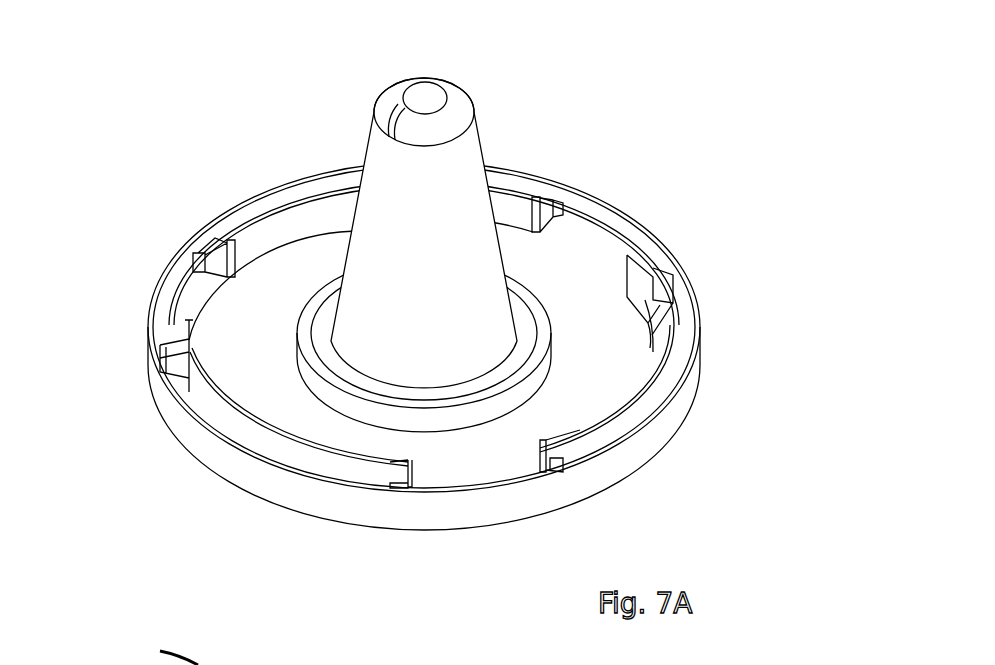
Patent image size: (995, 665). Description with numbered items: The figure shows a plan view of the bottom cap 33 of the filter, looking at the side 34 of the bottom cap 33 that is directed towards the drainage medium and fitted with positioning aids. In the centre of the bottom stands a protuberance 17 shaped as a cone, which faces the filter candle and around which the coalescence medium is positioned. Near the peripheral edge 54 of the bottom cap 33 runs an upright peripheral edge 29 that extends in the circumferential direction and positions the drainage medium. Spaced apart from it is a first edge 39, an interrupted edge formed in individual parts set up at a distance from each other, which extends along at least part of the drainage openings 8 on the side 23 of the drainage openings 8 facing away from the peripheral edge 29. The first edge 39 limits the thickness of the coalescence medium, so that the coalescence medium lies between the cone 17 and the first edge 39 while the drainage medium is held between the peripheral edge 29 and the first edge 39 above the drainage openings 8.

The drainage opening 8 is at (341, 468).
The protuberance 17 is at (440, 118).
The side of the drainage openings 23 is at (655, 389).
The upright peripheral edge 29 is at (667, 425).
The bottom cap 33 is at (239, 559).
The side of the bottom cap 34 is at (580, 247).
The first edge 39 is at (263, 232).
The peripheral edge 54 is at (165, 420).